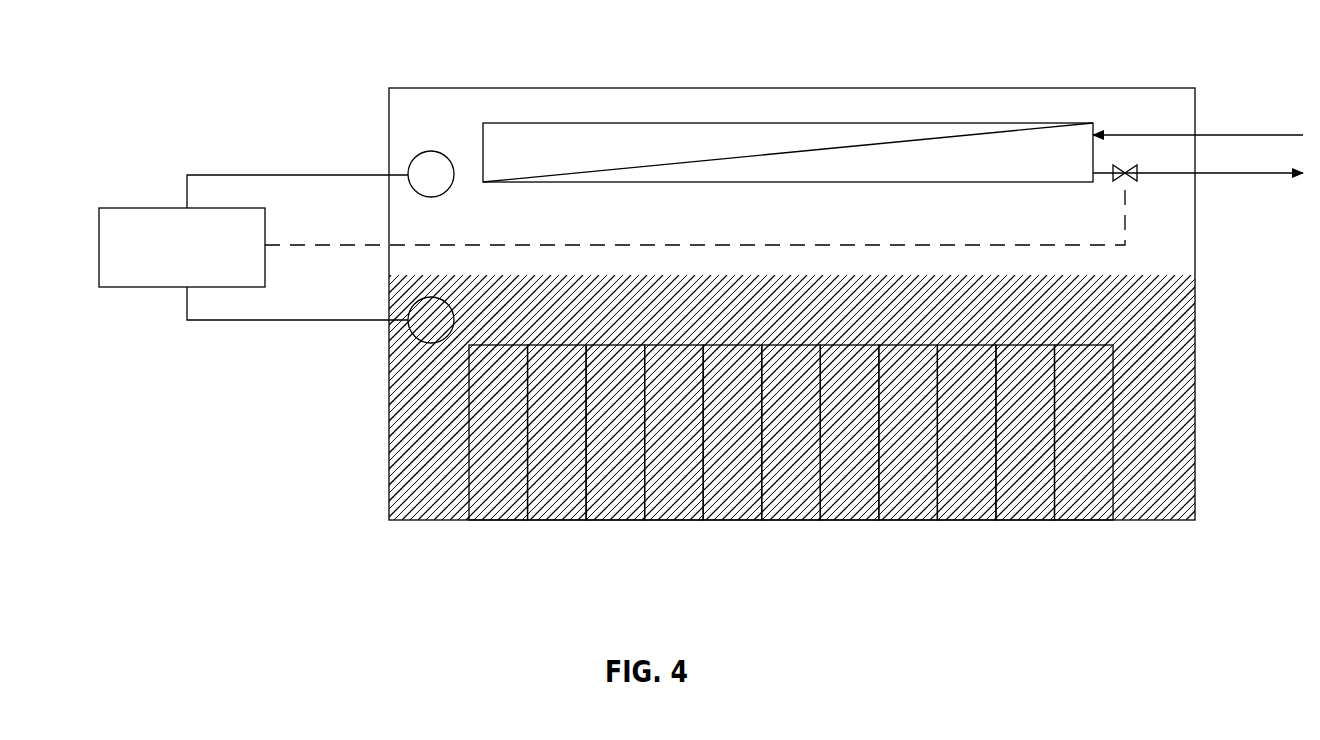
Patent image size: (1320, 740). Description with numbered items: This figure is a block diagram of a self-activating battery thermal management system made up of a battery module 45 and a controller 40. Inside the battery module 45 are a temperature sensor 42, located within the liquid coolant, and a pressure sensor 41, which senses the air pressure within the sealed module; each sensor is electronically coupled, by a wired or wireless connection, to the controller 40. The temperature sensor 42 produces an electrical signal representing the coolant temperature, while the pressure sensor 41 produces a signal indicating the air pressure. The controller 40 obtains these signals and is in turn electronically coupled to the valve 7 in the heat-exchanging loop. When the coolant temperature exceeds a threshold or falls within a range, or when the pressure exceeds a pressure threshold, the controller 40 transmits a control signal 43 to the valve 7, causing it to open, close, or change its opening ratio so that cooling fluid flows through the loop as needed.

The battery module 45 is at (443, 88).
The pressure sensor 41 is at (408, 142).
The temperature sensor 42 is at (410, 347).
The controller 40 is at (253, 247).
The control signal 43 is at (695, 213).
The valve 7 is at (1125, 173).